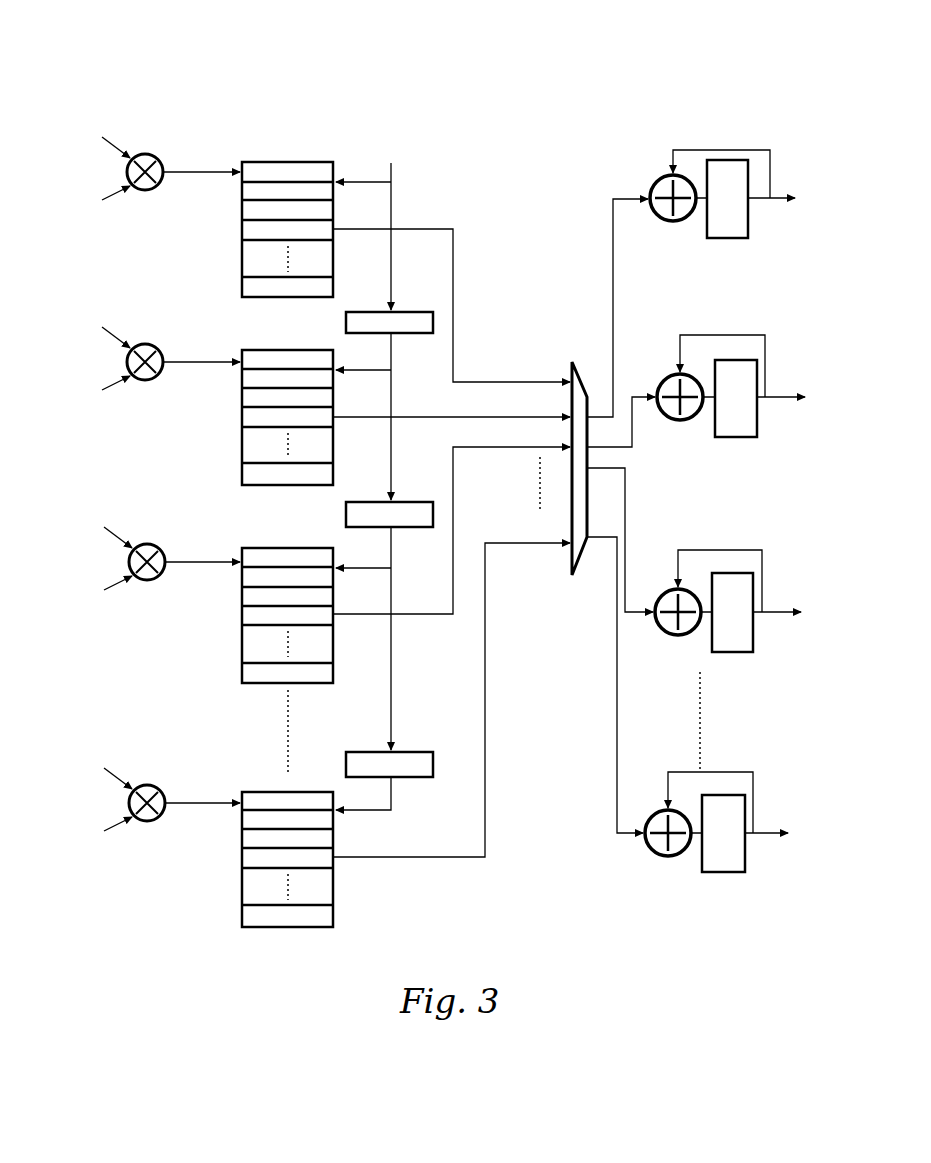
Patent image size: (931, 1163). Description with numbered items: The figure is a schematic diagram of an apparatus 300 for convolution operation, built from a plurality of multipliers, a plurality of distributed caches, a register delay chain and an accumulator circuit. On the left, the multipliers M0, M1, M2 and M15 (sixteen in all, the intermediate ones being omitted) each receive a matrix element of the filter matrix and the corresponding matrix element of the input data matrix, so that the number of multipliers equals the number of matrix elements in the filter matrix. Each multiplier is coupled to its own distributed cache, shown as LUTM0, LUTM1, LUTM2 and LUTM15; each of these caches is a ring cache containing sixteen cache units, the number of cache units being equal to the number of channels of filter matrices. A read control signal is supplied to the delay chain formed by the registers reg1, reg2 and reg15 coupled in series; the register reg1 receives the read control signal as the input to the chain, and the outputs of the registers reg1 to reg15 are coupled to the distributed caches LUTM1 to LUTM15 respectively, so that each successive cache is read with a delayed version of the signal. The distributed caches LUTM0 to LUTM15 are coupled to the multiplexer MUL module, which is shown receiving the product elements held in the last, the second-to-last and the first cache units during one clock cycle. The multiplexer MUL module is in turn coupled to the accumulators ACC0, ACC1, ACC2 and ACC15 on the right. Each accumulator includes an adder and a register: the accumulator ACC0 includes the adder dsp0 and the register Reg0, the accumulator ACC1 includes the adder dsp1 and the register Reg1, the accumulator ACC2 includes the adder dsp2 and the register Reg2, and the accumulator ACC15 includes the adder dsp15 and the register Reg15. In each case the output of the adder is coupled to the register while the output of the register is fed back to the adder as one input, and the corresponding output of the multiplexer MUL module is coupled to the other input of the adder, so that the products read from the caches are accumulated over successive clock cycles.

The apparatus for convolution operation 300 is at (279, 60).
The multiplier M0 is at (153, 168).
The multiplier M1 is at (153, 358).
The multiplier M2 is at (153, 561).
The multiplier M15 is at (153, 801).
The distributed cache LUTM0 is at (287, 216).
The distributed cache LUTM1 is at (287, 408).
The distributed cache LUTM2 is at (287, 606).
The distributed cache LUTM15 is at (287, 851).
The register reg1 is at (389, 322).
The register reg2 is at (389, 514).
The register reg15 is at (389, 764).
The multiplexer module MUL is at (571, 458).
The adder dsp0 is at (673, 212).
The adder dsp1 is at (679, 414).
The adder dsp2 is at (678, 628).
The adder dsp15 is at (670, 852).
The register Reg0 is at (727, 199).
The register Reg1 is at (736, 398).
The register Reg2 is at (732, 612).
The register Reg15 is at (723, 833).
The accumulator ACC0 is at (722, 213).
The accumulator ACC1 is at (730, 411).
The accumulator ACC2 is at (728, 622).
The accumulator ACC15 is at (716, 850).